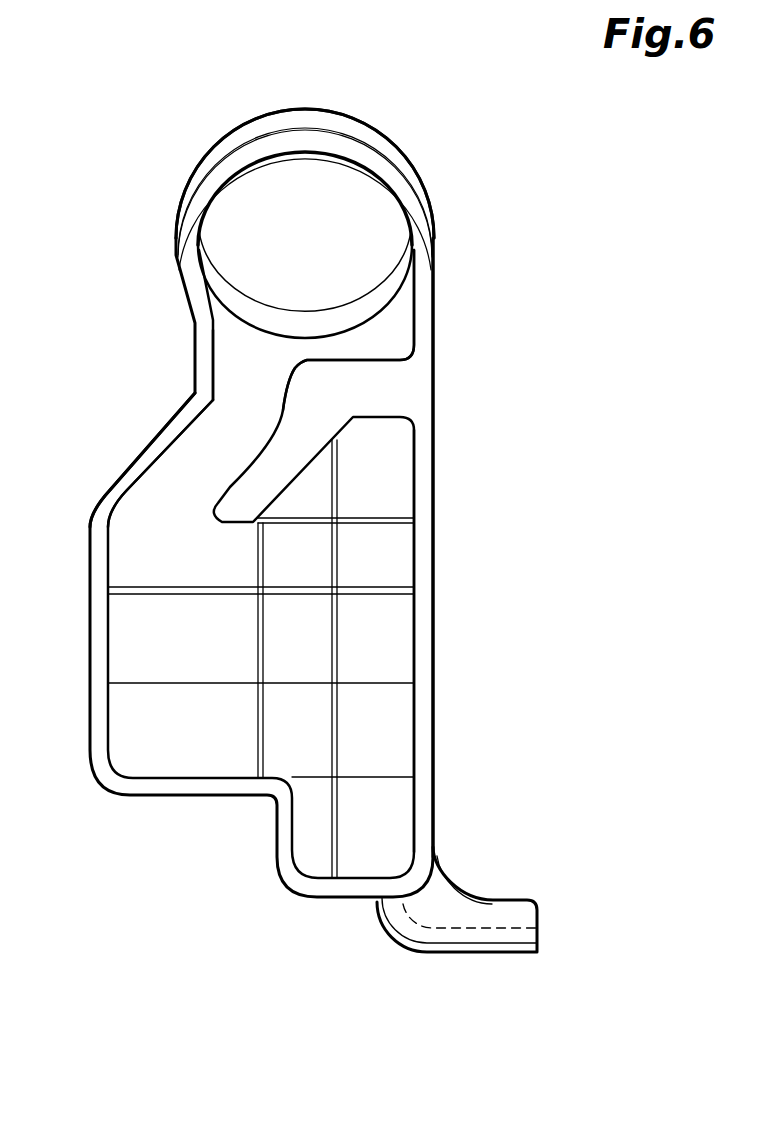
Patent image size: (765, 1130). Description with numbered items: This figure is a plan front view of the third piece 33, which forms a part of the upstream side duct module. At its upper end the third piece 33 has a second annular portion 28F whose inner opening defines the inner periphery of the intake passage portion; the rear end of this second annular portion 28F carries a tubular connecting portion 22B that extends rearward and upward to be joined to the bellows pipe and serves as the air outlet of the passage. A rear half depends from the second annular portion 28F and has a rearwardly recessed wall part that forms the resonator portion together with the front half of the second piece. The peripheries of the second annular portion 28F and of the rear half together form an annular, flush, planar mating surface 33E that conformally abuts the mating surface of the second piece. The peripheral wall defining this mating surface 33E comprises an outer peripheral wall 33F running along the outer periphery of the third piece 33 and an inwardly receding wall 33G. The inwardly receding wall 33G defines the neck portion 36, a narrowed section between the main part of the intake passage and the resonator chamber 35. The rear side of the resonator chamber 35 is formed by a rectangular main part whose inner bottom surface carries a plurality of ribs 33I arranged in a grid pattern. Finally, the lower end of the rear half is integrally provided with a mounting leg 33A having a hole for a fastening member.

The third piece 33 is at (440, 108).
The tubular connecting portion 22B is at (305, 110).
The second annular portion 28F is at (213, 185).
The mating surface 33E is at (130, 472).
The outer peripheral wall 33F is at (423, 560).
The inwardly receding wall 33G is at (313, 418).
The neck portion 36 is at (231, 465).
The resonator chamber 35 is at (196, 673).
The ribs 33I is at (307, 593).
The mounting leg 33A is at (483, 944).